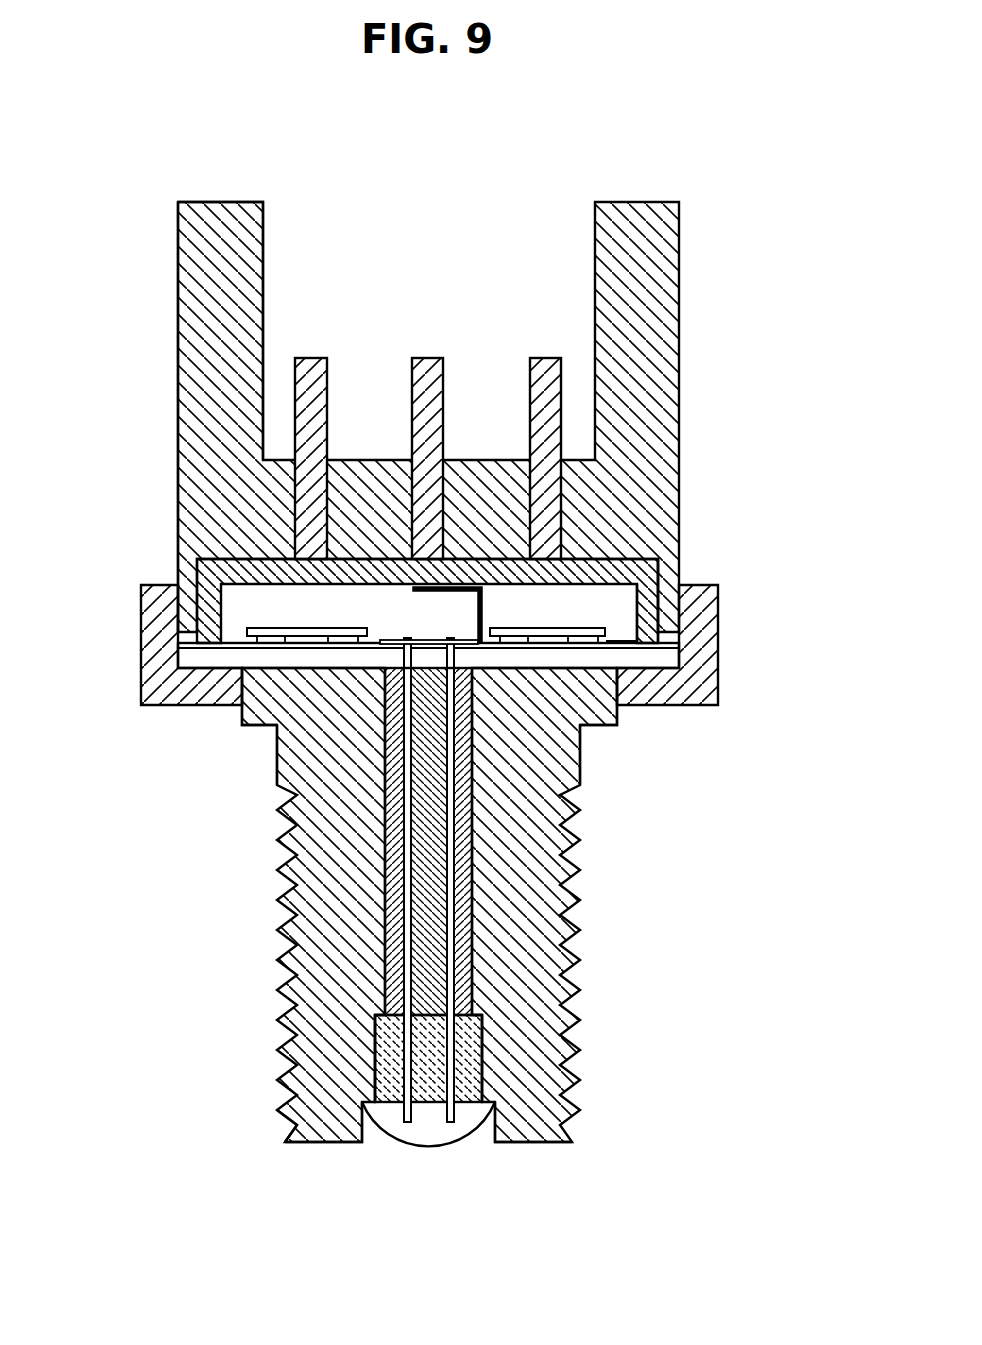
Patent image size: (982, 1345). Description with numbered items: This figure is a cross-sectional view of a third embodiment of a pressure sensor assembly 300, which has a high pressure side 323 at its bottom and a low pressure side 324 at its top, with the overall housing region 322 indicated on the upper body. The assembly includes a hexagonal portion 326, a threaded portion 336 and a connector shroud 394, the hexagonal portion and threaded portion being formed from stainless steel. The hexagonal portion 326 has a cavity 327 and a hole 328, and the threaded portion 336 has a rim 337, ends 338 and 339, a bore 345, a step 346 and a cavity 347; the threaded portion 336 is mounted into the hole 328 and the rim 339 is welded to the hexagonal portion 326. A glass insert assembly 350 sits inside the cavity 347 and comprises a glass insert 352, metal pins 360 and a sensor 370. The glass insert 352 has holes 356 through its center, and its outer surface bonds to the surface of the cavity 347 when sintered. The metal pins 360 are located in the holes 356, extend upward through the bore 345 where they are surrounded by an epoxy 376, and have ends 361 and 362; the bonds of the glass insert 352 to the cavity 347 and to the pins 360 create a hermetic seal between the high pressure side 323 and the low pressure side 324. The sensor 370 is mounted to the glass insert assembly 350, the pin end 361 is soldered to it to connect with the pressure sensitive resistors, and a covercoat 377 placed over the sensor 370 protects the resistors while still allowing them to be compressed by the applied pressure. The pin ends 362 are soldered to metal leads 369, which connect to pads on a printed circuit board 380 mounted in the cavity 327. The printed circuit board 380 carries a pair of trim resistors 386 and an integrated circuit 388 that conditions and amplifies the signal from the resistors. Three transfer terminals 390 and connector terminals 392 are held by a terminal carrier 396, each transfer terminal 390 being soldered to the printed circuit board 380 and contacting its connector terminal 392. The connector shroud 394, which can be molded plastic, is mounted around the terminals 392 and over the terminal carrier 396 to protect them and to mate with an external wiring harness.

The pressure sensor assembly 300 is at (203, 130).
The housing 322 is at (732, 368).
The low pressure side 324 is at (428, 228).
The connector shroud 394 is at (178, 380).
The connector terminals 392 is at (430, 357).
The cavity 327 is at (243, 573).
The terminal carrier 396 is at (643, 578).
The hexagonal portion 326 is at (725, 635).
The hole 328 is at (240, 685).
The integrated circuit 388 is at (343, 628).
The trim resistors 386 is at (555, 628).
The printed circuit board 380 is at (622, 642).
The transfer terminals 390 is at (441, 590).
The metal leads 369 is at (415, 640).
The pin ends 362 is at (380, 643).
The rim 339 is at (618, 712).
The rim 337 is at (583, 728).
The threaded portion 336 is at (279, 955).
The bore 345 is at (385, 900).
The metal pins 360 is at (410, 792).
The epoxy 376 is at (425, 837).
The step 346 is at (382, 1013).
The pin end 361 is at (377, 1067).
The glass insert 352 is at (483, 1027).
The glass insert assembly 350 is at (479, 1055).
The holes 356 is at (456, 1073).
The end 338 is at (295, 1108).
The cavity 347 is at (372, 1145).
The covercoat 377 is at (404, 1143).
The sensor 370 is at (440, 1130).
The high pressure side 323 is at (352, 1172).